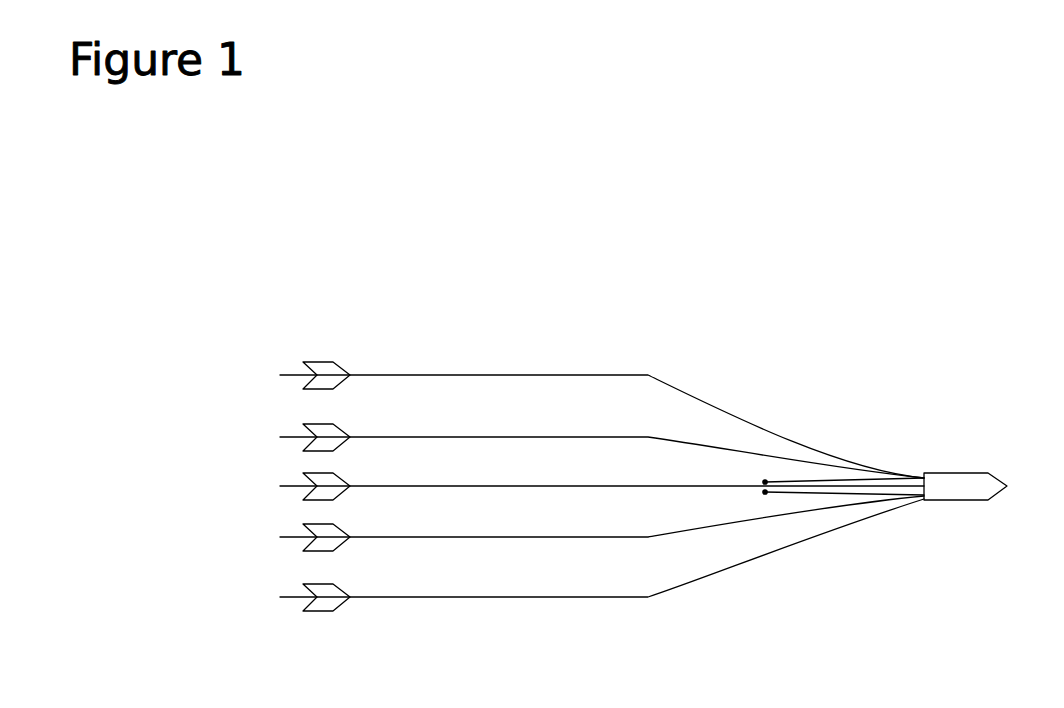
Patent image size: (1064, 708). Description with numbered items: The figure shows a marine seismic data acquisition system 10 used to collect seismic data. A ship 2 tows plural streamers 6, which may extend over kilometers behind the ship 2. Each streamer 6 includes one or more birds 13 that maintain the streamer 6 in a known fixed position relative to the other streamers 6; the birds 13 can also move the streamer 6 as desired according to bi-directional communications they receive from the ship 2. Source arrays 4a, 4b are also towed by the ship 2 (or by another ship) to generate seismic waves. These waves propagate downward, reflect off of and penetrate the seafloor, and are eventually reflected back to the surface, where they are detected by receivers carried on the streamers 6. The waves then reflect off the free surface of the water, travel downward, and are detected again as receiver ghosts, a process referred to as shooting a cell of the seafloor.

The data acquisition system 10 is at (451, 268).
The bird 13 is at (343, 364).
The streamer 6 is at (418, 376).
The source array 4a is at (765, 482).
The source array 4b is at (765, 492).
The ship 2 is at (964, 473).